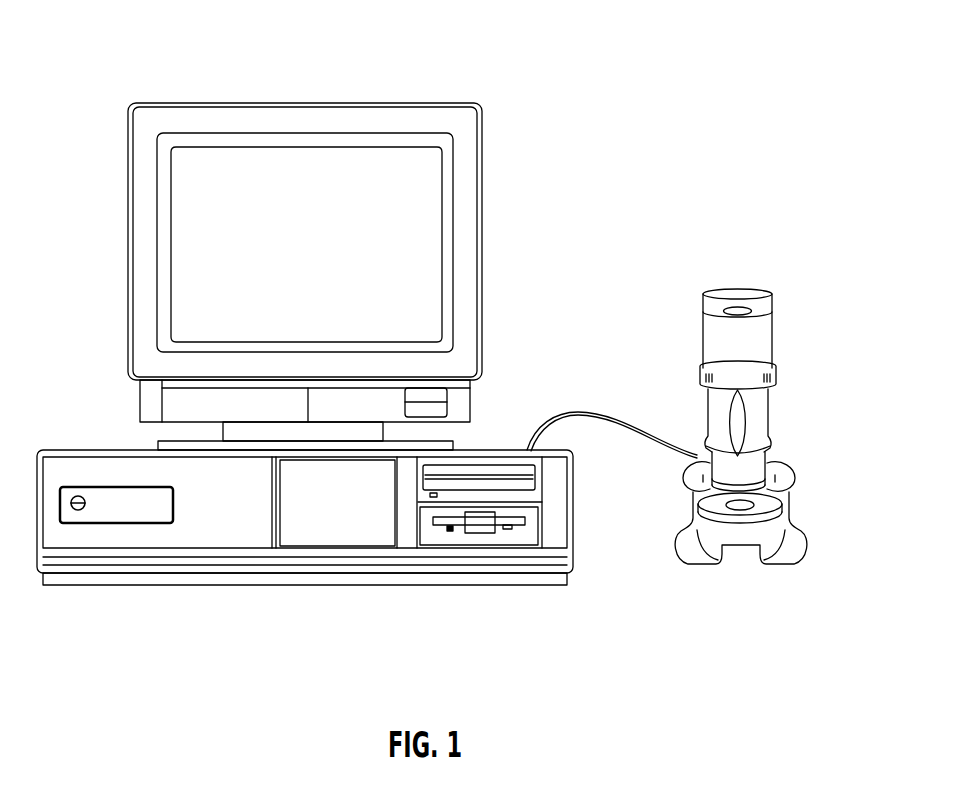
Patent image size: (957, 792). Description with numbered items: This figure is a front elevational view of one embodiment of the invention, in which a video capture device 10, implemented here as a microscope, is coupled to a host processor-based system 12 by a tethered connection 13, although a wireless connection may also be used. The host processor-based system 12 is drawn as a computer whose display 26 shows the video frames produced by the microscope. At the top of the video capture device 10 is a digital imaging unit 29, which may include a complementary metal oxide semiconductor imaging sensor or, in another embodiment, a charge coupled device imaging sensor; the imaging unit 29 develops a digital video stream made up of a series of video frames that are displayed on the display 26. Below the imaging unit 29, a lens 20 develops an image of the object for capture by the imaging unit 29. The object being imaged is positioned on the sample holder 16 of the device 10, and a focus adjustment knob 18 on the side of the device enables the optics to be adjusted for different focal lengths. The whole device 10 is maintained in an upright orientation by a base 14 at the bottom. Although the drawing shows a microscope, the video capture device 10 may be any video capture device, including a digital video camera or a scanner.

The video capture device 10 is at (797, 615).
The host processor-based system 12 is at (233, 71).
The tethered connection 13 is at (592, 410).
The base 14 is at (792, 538).
The sample holder 16 is at (770, 508).
The focus adjustment knob 18 is at (783, 470).
The lens 20 is at (768, 458).
The display 26 is at (428, 102).
The digital imaging unit 29 is at (773, 370).